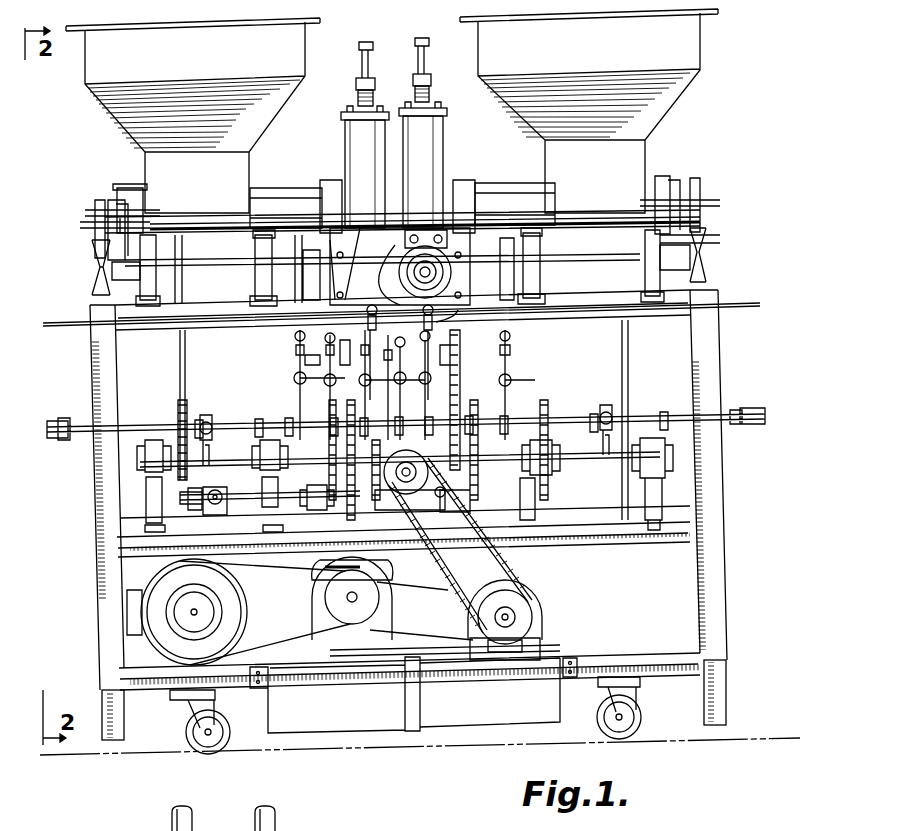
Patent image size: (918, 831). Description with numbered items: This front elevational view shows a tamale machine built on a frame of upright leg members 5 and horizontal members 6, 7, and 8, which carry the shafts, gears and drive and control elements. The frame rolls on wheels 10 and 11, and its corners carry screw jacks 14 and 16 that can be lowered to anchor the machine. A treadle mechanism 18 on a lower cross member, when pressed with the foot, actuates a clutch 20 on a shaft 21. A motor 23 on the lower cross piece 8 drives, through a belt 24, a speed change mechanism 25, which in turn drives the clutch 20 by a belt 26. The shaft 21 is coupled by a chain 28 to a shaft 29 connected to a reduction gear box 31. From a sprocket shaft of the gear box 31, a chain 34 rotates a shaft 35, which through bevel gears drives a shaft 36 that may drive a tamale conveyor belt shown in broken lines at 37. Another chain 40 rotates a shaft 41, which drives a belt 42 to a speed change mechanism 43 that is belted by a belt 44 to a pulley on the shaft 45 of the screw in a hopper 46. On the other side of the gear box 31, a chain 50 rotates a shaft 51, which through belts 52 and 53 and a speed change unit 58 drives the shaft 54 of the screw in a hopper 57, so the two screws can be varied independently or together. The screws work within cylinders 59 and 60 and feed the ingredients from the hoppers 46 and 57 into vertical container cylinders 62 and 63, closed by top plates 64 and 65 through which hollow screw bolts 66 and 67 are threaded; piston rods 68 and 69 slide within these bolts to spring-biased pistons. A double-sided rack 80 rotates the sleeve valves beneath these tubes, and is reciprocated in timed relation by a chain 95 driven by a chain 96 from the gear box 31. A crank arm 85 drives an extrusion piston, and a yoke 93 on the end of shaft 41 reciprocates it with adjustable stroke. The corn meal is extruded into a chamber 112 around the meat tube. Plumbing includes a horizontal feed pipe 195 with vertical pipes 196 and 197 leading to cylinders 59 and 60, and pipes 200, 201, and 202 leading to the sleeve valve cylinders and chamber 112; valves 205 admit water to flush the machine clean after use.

The upright leg members 5 is at (705, 362).
The horizontal member 6 is at (570, 315).
The horizontal member 7 is at (622, 543).
The lower cross piece 8 is at (636, 655).
The wheel 10 is at (186, 738).
The wheel 11 is at (645, 722).
The screw jack 14 is at (118, 718).
The screw jack 16 is at (716, 702).
The treadle mechanism 18 is at (482, 722).
The clutch 20 is at (528, 612).
The shaft 21 is at (505, 618).
The motor 23 is at (233, 615).
The belt 24 is at (268, 580).
The speed change mechanism 25 is at (391, 570).
The belt 26 is at (445, 590).
The chain 28 is at (495, 565).
The shaft 29 is at (428, 470).
The reduction gear box 31 is at (438, 497).
The chain 34 is at (312, 489).
The shaft 35 is at (250, 500).
The shaft 36 is at (214, 504).
The belt 37 is at (735, 300).
The chain 40 is at (303, 466).
The shaft 41 is at (246, 463).
The belt 42 is at (186, 375).
The speed change mechanism 43 is at (82, 283).
The belt 44 is at (98, 238).
The shaft 45 is at (93, 218).
The hopper 46 is at (118, 118).
The chain 50 is at (480, 443).
The shaft 51 is at (588, 458).
The belt 52 is at (629, 355).
The belt 53 is at (700, 238).
The shaft 54 is at (708, 202).
The hopper 57 is at (678, 88).
The speed change unit 58 is at (718, 255).
The cylinder 59 is at (280, 195).
The cylinder 60 is at (510, 190).
The vertical container cylinder 62 is at (360, 146).
The vertical container cylinder 63 is at (428, 143).
The top plate 64 is at (340, 115).
The top plate 65 is at (447, 118).
The hollow screw bolt 66 is at (360, 98).
The hollow screw bolt 67 is at (428, 95).
The piston rod 68 is at (362, 60).
The piston rod 69 is at (425, 62).
The double-sided rack 80 is at (385, 230).
The crank arm 85 is at (456, 456).
The yoke 93 is at (369, 470).
The chain 95 is at (359, 385).
The chain 96 is at (456, 390).
The chamber 112 is at (403, 275).
The horizontal feed pipe 195 is at (655, 410).
The vertical pipe 196 is at (297, 276).
The vertical pipe 197 is at (495, 272).
The pipe 200 is at (355, 347).
The pipe 201 is at (440, 318).
The pipe 202 is at (411, 347).
The valves 205 is at (205, 420).